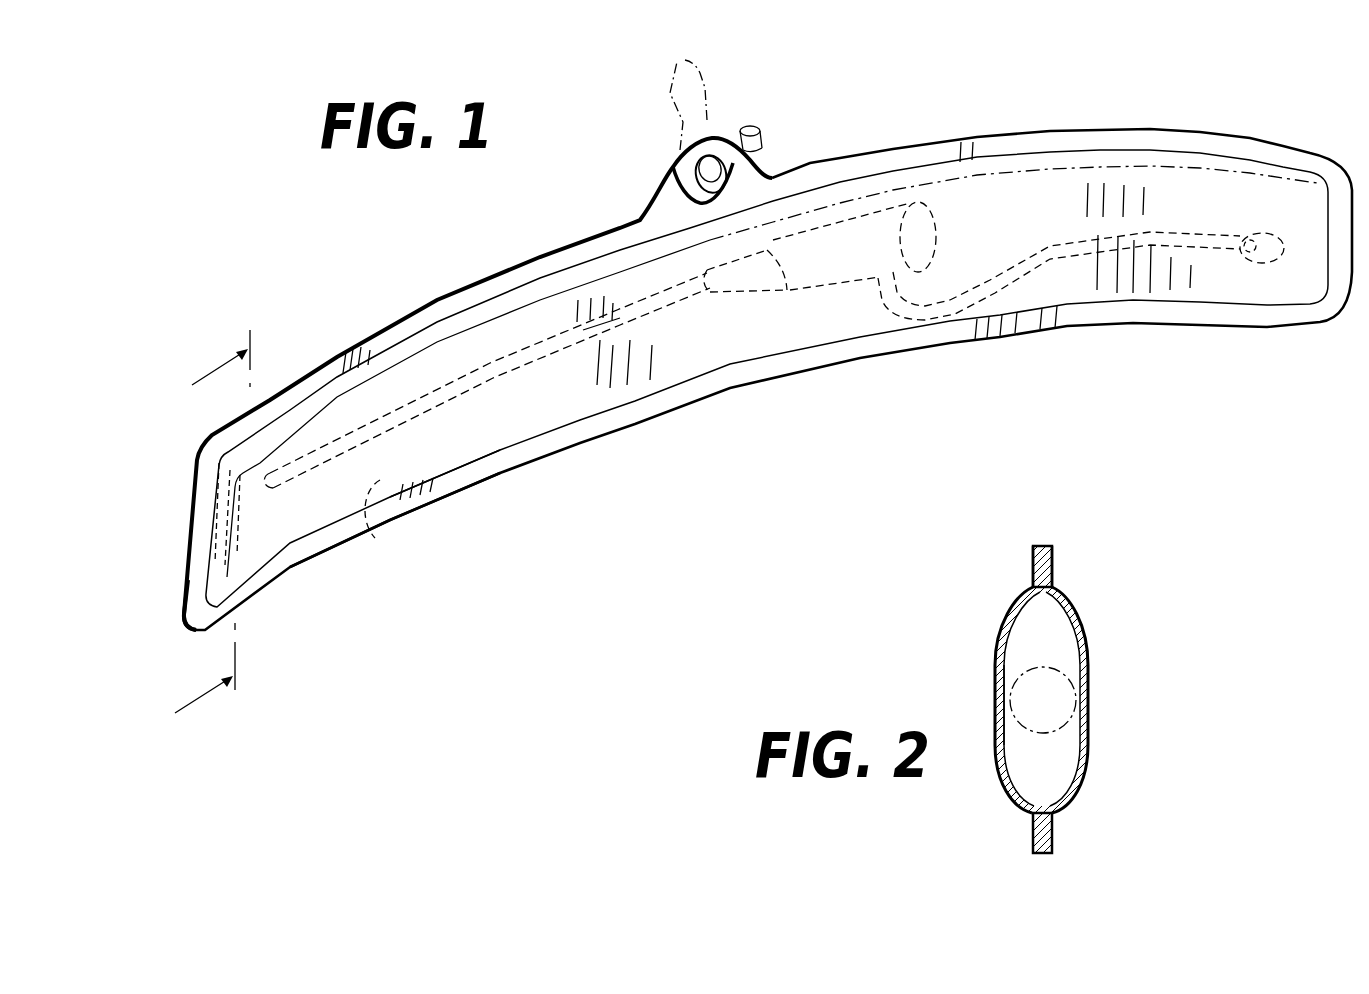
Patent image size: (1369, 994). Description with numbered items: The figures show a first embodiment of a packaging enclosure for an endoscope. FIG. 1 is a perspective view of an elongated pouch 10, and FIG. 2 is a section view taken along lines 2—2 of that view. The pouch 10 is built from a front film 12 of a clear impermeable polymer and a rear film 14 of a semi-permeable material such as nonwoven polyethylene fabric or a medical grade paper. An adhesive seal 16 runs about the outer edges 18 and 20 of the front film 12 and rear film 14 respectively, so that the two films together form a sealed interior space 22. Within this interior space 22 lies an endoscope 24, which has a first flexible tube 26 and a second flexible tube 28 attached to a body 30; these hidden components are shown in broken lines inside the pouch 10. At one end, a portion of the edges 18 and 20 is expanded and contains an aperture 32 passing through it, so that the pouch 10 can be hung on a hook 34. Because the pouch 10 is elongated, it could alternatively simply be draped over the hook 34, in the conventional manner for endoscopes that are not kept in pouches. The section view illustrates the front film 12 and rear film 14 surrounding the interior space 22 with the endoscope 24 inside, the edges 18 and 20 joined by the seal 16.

In FIG. 1, the section line 2 is at (200, 535).
In FIG. 1, the elongated pouch 10 is at (634, 442).
In FIG. 1, the front film 12 is at (303, 530).
In FIG. 2, the front film 12 is at (1085, 628).
In FIG. 1, the rear film 14 is at (367, 540).
In FIG. 2, the rear film 14 is at (1000, 626).
In FIG. 1, the adhesive seal 16 is at (188, 628).
In FIG. 2, the adhesive seal 16 is at (1043, 543).
In FIG. 1, the outer edge of front film 18 is at (337, 537).
In FIG. 2, the outer edge of front film 18 is at (1054, 566).
In FIG. 1, the outer edge of rear film 20 is at (443, 497).
In FIG. 2, the outer edge of rear film 20 is at (1032, 562).
In FIG. 2, the sealed interior space 22 is at (1063, 785).
In FIG. 1, the endoscope 24 is at (726, 310).
In FIG. 2, the endoscope 24 is at (1070, 670).
In FIG. 1, the first flexible tube 26 is at (513, 363).
In FIG. 1, the second flexible tube 28 is at (1040, 267).
In FIG. 1, the body 30 is at (837, 278).
In FIG. 1, the aperture 32 is at (690, 196).
In FIG. 1, the hook 34 is at (762, 148).